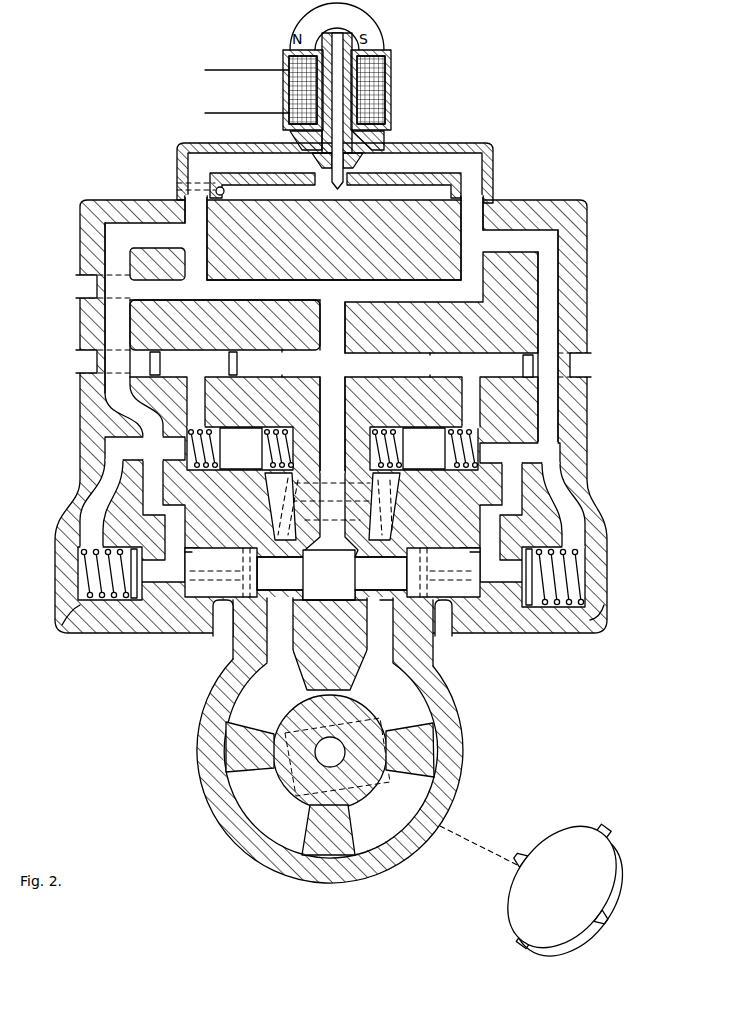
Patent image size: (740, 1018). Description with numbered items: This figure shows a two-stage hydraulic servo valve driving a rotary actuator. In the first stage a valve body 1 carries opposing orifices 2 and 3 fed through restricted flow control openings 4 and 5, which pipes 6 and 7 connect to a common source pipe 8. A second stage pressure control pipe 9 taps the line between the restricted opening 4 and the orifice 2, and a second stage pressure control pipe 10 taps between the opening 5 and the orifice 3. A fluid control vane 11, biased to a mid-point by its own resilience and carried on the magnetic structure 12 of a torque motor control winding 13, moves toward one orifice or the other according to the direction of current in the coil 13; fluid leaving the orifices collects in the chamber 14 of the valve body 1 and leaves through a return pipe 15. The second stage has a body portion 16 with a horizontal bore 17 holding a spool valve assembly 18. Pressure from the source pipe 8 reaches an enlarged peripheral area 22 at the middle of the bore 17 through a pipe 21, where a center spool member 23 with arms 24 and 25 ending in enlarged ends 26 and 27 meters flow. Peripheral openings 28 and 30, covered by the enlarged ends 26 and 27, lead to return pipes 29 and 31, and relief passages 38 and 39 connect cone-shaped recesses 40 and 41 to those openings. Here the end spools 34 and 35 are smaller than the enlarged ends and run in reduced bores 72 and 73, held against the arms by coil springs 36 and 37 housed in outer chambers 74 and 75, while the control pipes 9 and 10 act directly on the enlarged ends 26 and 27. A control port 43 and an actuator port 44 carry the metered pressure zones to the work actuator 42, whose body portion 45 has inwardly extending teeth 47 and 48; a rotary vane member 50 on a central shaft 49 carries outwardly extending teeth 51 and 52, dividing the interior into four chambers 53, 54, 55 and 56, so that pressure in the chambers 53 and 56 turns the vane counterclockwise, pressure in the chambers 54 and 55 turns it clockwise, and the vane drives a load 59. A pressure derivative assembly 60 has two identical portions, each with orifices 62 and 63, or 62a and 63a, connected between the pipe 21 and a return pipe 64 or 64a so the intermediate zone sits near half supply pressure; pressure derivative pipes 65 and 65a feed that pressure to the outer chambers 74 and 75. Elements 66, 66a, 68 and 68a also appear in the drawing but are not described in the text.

The valve body 1 is at (488, 138).
The orifice 2 is at (312, 160).
The orifice 3 is at (345, 160).
The restricted flow control opening 4 is at (192, 248).
The restricted flow control opening 5 is at (470, 258).
The pipe 6 is at (190, 280).
The pipe 7 is at (408, 301).
The common source pipe 8 is at (76, 288).
The second stage pressure control pipe 9 is at (112, 310).
The second stage pressure control pipe 10 is at (550, 314).
The fluid control vane 11 is at (345, 116).
The magnetic structure 12 is at (385, 104).
The torque motor control winding 13 is at (385, 74).
The chamber 14 is at (446, 184).
The return pipe 15 is at (226, 191).
The body portion 16 is at (619, 498).
The horizontal bore 17 is at (316, 550).
The spool valve assembly 18 is at (390, 607).
The pipe 21 is at (332, 305).
The enlarged peripheral area 22 is at (330, 600).
The center spool member 23 is at (338, 565).
The arm 24 is at (302, 579).
The arm 25 is at (380, 579).
The enlarged end 26 is at (232, 565).
The enlarged end 27 is at (447, 565).
The peripheral opening 28 is at (224, 548).
The exhaust return pipe 29 is at (222, 638).
The peripheral opening 30 is at (442, 548).
The flow return pipe 31 is at (440, 645).
The end spool 34 is at (194, 557).
The end spool 35 is at (478, 564).
The coil spring 36 is at (80, 577).
The coil spring 37 is at (587, 585).
The relief passage 38 is at (268, 573).
The relief passage 39 is at (404, 586).
The cone-shaped recess 40 is at (215, 582).
The cone-shaped recess 41 is at (476, 580).
The work actuator 42 is at (179, 758).
The control port 43 is at (271, 660).
The actuator port 44 is at (384, 655).
The body portion 45 is at (212, 840).
The tooth 47 is at (306, 822).
The tooth 48 is at (352, 688).
The central shaft 49 is at (470, 838).
The rotary vane member 50 is at (380, 720).
The tooth 51 is at (238, 722).
The tooth 52 is at (392, 772).
The chamber 53 is at (291, 689).
The chamber 54 is at (404, 703).
The chamber 55 is at (265, 800).
The chamber 56 is at (388, 820).
The load 59 is at (618, 888).
The pressure derivative assembly 60 is at (341, 408).
The orifice 62 is at (284, 358).
The orifice 62a is at (425, 362).
The orifice 63 is at (162, 362).
The orifice 63a is at (520, 362).
The return pipe 64 is at (76, 353).
The return pipe 64a is at (588, 365).
The pressure derivative pipe 65 is at (246, 364).
The pressure derivative pipe 65a is at (553, 462).
The lever 66 is at (372, 514).
The lever 66a is at (266, 545).
The spring 68 is at (251, 449).
The spring 68a is at (436, 449).
The bore 72 is at (162, 521).
The bore 73 is at (512, 583).
The outer chamber 74 is at (62, 610).
The outer chamber 75 is at (604, 617).